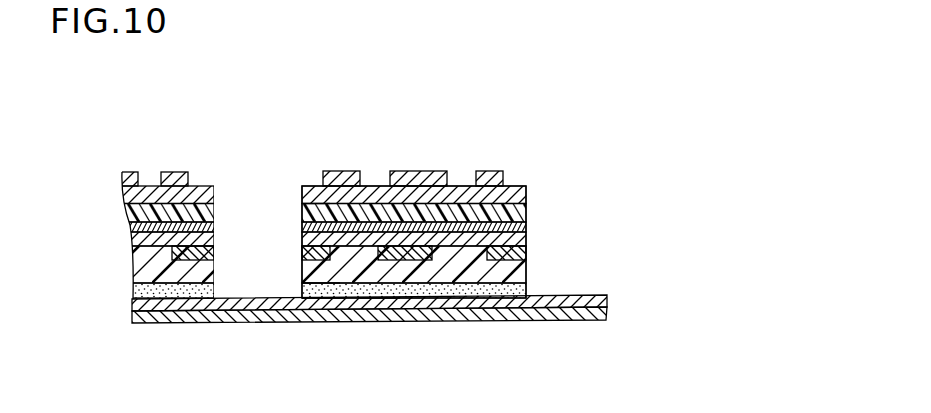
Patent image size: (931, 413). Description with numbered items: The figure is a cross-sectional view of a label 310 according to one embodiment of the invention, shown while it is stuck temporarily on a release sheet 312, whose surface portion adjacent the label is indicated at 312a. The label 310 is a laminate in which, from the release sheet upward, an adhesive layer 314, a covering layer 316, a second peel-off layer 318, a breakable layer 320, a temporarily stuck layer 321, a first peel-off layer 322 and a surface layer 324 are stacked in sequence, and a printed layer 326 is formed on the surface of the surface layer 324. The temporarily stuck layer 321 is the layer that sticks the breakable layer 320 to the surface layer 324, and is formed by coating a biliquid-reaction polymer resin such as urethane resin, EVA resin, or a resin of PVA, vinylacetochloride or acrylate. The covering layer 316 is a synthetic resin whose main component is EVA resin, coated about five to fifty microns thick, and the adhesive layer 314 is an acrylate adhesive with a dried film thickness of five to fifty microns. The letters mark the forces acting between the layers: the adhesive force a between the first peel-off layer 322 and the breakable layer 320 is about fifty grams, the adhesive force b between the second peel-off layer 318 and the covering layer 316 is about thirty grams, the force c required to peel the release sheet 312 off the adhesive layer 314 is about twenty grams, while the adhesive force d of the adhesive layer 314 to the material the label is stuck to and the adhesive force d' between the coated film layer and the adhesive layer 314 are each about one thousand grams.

The label 310 is at (408, 113).
The release sheet 312 is at (495, 316).
The substrate surface layer 312a is at (428, 303).
The adhesive layer 314 is at (511, 288).
The covering layer 316 is at (511, 273).
The second peel-off layer 318 is at (514, 249).
The breakable layer 320 is at (519, 230).
The temporarily stuck layer 321 is at (526, 219).
The first peel-off layer 322 is at (524, 200).
The surface layer 324 is at (525, 184).
The printed layer 326 is at (494, 169).
The adhesive force between first peel-off layer and breakable layer a is at (303, 207).
The adhesive force between second peel-off layer and covering layer b is at (326, 262).
The force required for peeling release sheet off adhesive layer c is at (330, 280).
The adhesive force of adhesive layer d is at (303, 282).
The adhesive force between coated film layer and adhesive layer d' is at (377, 329).